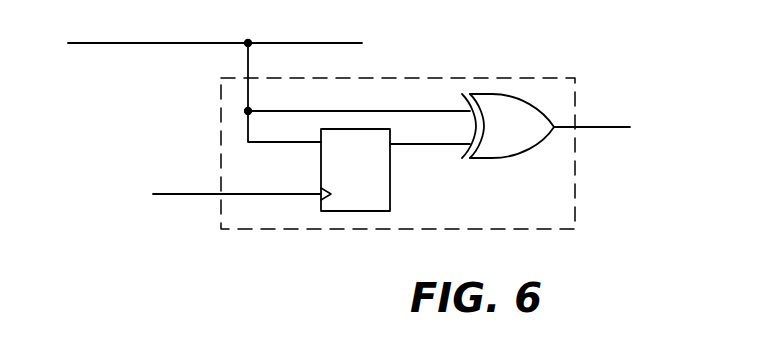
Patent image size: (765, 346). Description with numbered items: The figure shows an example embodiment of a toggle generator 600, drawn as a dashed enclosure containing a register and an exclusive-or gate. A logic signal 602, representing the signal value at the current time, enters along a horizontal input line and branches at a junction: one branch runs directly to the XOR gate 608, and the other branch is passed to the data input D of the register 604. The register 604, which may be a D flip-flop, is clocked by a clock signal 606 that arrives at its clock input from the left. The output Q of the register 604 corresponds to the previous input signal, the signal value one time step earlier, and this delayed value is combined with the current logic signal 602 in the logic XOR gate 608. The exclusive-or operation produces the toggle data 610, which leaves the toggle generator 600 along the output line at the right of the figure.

The toggle generator 600 is at (506, 78).
The logic signal 602 is at (152, 43).
The register 604 is at (343, 211).
The clock signal 606 is at (190, 194).
The XOR gate 608 is at (490, 159).
The toggle data 610 is at (607, 128).